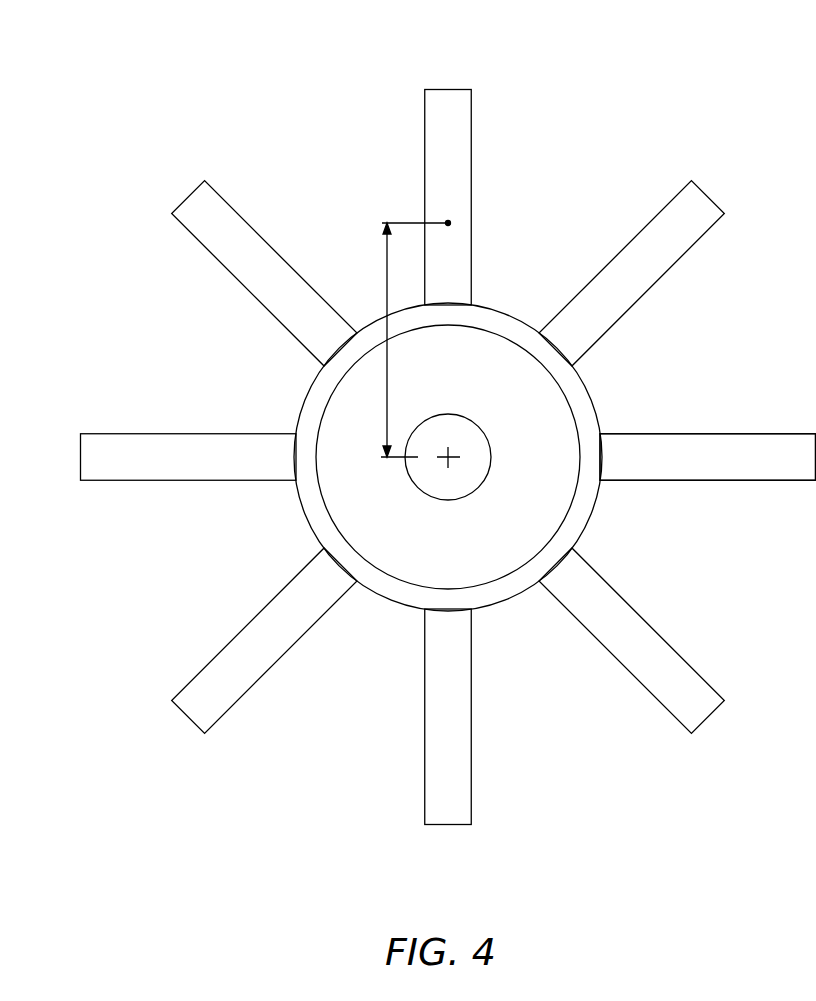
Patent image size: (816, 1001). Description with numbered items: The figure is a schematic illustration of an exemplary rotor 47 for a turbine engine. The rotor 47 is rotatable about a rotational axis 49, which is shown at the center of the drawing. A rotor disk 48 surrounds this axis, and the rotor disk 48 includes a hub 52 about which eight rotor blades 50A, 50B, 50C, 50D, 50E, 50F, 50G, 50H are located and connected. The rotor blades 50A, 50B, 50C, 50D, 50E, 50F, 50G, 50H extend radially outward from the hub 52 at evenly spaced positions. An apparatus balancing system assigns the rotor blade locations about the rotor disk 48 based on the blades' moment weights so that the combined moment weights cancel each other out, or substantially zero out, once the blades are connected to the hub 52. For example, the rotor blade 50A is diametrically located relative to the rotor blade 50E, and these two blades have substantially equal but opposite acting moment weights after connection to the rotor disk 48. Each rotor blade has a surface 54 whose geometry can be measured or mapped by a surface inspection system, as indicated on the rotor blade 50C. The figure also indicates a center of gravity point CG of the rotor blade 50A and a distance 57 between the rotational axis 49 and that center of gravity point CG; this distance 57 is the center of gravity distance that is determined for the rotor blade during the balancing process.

The rotor 47 is at (678, 82).
The rotor disk 48 is at (603, 393).
The rotational axis 49 is at (449, 454).
The hub 52 is at (586, 509).
The surface 54 is at (750, 443).
The distance 57 is at (411, 340).
The center of gravity point CG is at (452, 221).
The rotor blade 50A is at (425, 112).
The rotor blade 50B is at (650, 220).
The rotor blade 50C is at (765, 481).
The rotor blade 50D is at (652, 693).
The rotor blade 50E is at (425, 790).
The rotor blade 50F is at (183, 713).
The rotor blade 50G is at (135, 481).
The rotor blade 50H is at (210, 255).